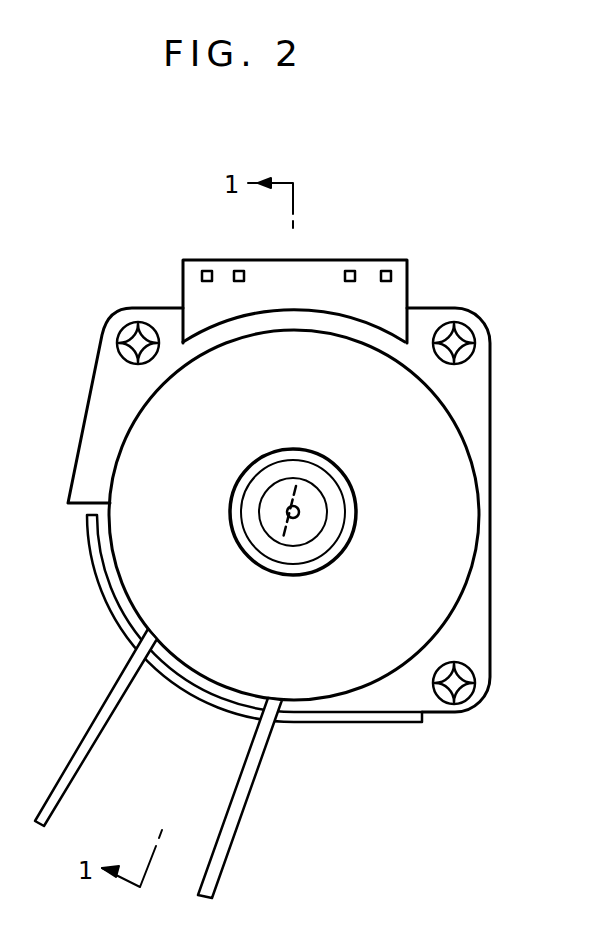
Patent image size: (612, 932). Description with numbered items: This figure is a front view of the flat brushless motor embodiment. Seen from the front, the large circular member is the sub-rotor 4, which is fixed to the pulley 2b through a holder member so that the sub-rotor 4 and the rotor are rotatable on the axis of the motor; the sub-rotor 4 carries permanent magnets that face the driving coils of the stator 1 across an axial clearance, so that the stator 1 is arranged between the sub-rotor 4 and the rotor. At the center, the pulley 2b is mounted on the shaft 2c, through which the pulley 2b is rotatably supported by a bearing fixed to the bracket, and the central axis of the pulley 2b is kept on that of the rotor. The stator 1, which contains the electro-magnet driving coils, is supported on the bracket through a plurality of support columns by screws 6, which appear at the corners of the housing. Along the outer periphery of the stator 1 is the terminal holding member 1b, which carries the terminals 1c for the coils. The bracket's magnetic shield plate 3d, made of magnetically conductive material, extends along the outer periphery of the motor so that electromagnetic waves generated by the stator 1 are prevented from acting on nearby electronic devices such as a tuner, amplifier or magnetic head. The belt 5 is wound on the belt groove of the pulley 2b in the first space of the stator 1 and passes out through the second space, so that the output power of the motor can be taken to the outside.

The stator 1 is at (480, 632).
The terminal holding member 1b is at (366, 259).
The terminals 1c is at (393, 276).
The pulley 2b is at (315, 503).
The shaft 2c is at (274, 511).
The magnetic shield plate 3d is at (387, 723).
The sub-rotor 4 is at (458, 536).
The belt 5 is at (228, 836).
The screws 6 is at (490, 340).